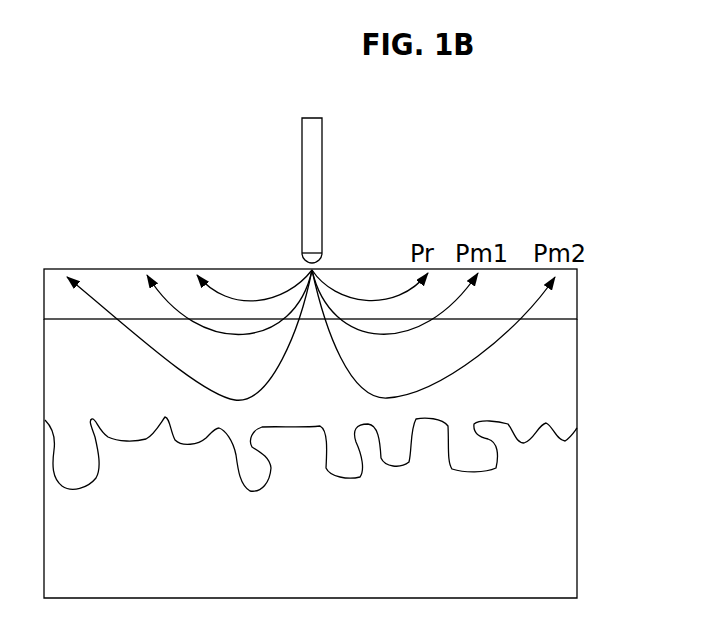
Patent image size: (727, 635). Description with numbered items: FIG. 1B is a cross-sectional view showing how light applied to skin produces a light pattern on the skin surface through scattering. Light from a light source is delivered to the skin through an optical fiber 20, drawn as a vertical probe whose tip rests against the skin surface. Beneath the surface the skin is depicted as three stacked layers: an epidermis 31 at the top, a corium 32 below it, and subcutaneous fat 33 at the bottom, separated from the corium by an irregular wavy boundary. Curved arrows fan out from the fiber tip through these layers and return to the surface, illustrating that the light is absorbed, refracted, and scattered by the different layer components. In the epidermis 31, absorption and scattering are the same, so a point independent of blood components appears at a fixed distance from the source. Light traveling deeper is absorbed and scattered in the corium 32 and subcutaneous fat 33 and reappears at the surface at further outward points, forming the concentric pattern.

The optical fiber 20 is at (322, 165).
The epidermis 31 is at (577, 290).
The corium 32 is at (310, 405).
The subcutaneous fat 33 is at (577, 506).